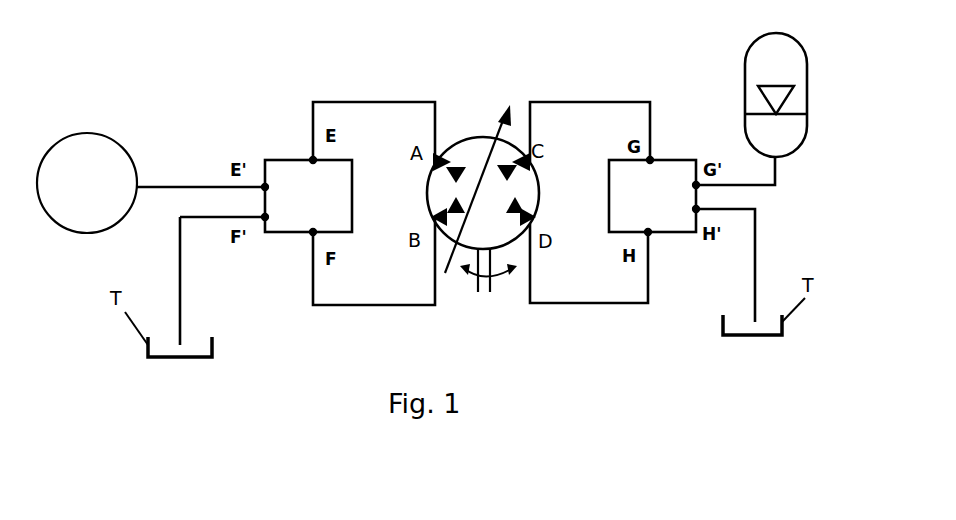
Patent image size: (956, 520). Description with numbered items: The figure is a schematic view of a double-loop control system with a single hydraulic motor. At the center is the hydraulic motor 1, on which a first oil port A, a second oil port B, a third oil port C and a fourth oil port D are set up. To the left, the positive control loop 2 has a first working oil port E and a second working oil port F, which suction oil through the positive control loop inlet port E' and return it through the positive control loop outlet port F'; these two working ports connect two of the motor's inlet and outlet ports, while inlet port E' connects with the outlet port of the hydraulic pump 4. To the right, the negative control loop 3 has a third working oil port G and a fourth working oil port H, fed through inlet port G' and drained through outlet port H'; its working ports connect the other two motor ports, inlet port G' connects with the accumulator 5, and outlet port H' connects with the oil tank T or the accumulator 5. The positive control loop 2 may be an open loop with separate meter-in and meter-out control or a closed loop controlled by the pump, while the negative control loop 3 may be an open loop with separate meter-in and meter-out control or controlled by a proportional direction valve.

The hydraulic motor 1 is at (482, 150).
The positive control loop 2 is at (298, 180).
The negative control loop 3 is at (657, 180).
The hydraulic pump 4 is at (88, 152).
The accumulator 5 is at (768, 50).